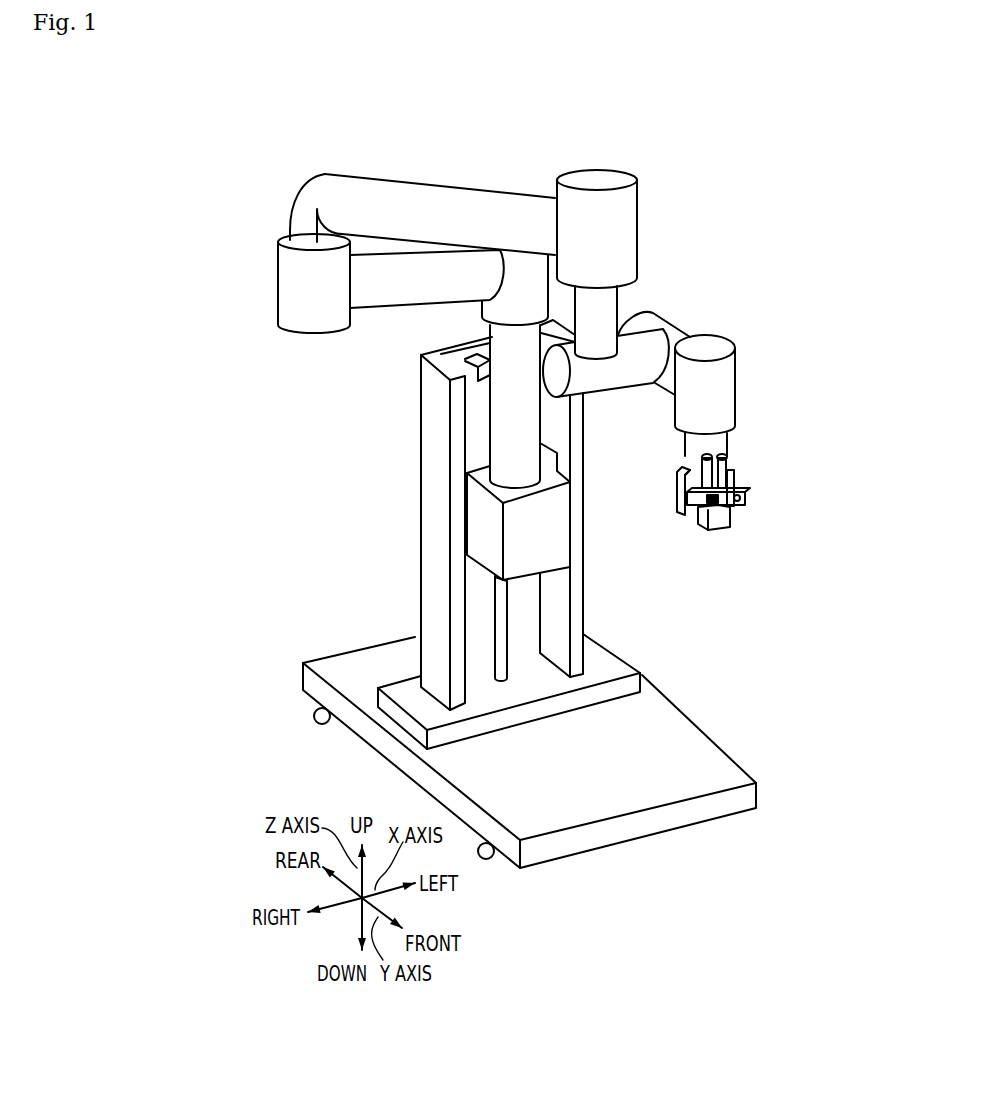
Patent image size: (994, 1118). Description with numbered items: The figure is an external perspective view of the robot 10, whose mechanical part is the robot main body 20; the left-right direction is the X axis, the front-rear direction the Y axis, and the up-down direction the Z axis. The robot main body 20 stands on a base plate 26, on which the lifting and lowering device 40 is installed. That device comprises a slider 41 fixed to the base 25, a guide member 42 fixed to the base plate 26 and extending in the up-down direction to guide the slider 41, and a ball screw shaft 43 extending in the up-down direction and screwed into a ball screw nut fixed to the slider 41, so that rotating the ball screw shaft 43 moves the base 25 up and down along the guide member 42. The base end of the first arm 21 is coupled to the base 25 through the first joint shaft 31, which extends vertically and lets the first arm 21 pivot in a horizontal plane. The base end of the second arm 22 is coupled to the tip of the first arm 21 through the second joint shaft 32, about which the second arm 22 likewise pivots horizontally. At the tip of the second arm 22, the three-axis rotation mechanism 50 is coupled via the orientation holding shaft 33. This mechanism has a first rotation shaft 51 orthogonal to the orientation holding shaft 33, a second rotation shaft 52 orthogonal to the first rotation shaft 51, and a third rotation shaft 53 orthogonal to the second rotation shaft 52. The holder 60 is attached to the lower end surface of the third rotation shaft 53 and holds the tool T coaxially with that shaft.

The robot 10 is at (708, 135).
The robot main body 20 is at (282, 143).
The first arm 21 is at (388, 277).
The second arm 22 is at (488, 205).
The base 25 is at (563, 535).
The base plate 26 is at (578, 843).
The first joint shaft 31 is at (478, 313).
The second joint shaft 32 is at (287, 290).
The orientation holding shaft 33 is at (628, 220).
The lifting and lowering device 40 is at (415, 510).
The slider 41 is at (552, 462).
The guide member 42 is at (580, 613).
The ball screw shaft 43 is at (507, 583).
The three-axis rotation mechanism 50 is at (722, 252).
The first rotation shaft 51 is at (610, 367).
The second rotation shaft 52 is at (663, 323).
The third rotation shaft 53 is at (725, 392).
The holder 60 is at (737, 477).
The tool T is at (738, 523).